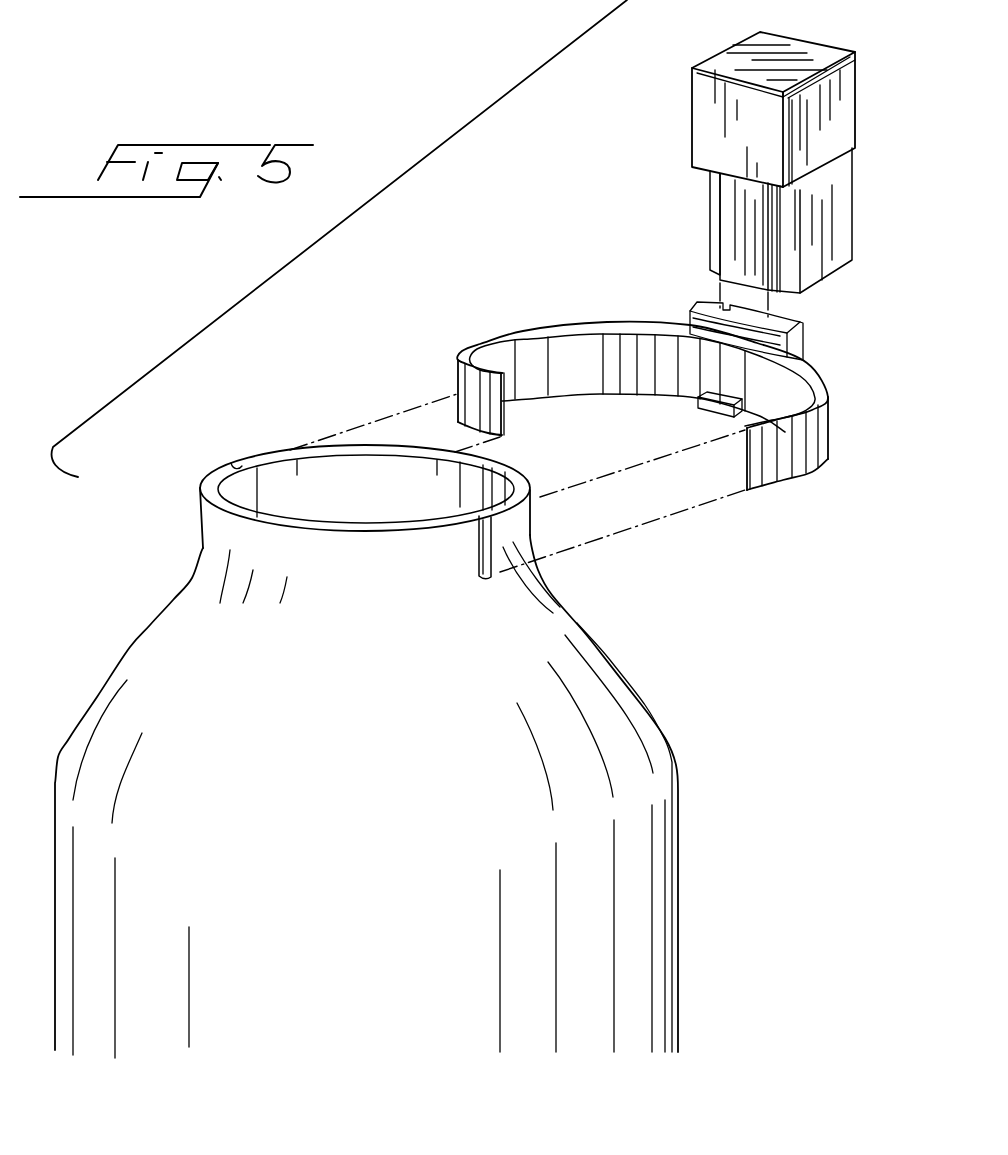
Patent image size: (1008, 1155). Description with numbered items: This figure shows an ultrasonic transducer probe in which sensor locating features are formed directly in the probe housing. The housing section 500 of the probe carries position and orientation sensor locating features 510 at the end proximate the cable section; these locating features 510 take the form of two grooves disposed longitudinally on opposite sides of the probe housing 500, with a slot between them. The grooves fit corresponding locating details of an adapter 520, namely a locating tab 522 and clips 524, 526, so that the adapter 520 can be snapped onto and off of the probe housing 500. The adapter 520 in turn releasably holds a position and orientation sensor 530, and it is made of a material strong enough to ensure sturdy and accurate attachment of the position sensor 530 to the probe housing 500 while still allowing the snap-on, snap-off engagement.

The housing section 500 is at (668, 757).
The position and orientation sensor locating features 510 is at (233, 470).
The adapter 520 is at (642, 404).
The locating tab 522 is at (703, 410).
The clip 524 is at (507, 428).
The clip 526 is at (740, 490).
The position and orientation sensor 530 is at (695, 118).